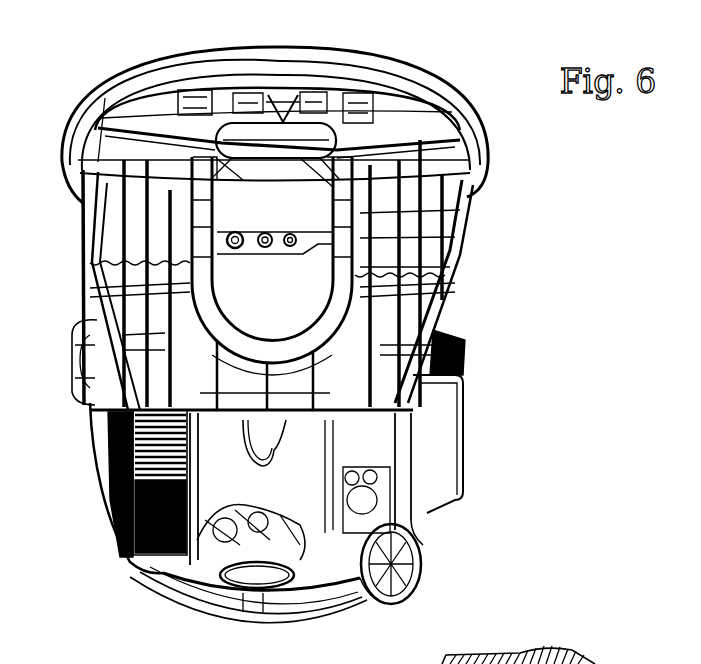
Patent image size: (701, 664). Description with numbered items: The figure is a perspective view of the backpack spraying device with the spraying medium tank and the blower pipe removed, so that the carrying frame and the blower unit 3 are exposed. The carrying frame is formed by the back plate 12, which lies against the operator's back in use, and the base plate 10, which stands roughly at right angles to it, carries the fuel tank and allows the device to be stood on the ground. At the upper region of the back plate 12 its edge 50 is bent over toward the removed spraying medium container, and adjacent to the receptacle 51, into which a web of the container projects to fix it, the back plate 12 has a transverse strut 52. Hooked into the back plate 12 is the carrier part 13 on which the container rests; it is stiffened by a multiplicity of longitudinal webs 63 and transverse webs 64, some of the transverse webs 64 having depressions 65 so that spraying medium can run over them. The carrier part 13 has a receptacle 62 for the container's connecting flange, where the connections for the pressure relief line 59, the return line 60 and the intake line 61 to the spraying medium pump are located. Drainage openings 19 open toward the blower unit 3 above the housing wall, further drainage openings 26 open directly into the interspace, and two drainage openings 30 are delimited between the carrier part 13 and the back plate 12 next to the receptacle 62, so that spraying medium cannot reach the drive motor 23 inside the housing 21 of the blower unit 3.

The blower unit 3 is at (167, 577).
The base plate 10 is at (233, 608).
The back plate 12 is at (488, 163).
The carrier part 13 is at (455, 238).
The drainage openings 19 is at (447, 378).
The housing 21 is at (197, 590).
The drive motor 23 is at (539, 655).
The further drainage openings 26 is at (108, 251).
The drainage openings 30 is at (168, 143).
The edge 50 is at (467, 110).
The receptacle 51 is at (247, 140).
The transverse strut 52 is at (202, 172).
The pressure relief line 59 is at (215, 242).
The return line 60 is at (268, 240).
The intake line 61 is at (293, 233).
The receptacle 62 is at (362, 425).
The longitudinal webs 63 is at (385, 345).
The transverse webs 64 is at (108, 282).
The depressions 65 is at (97, 413).